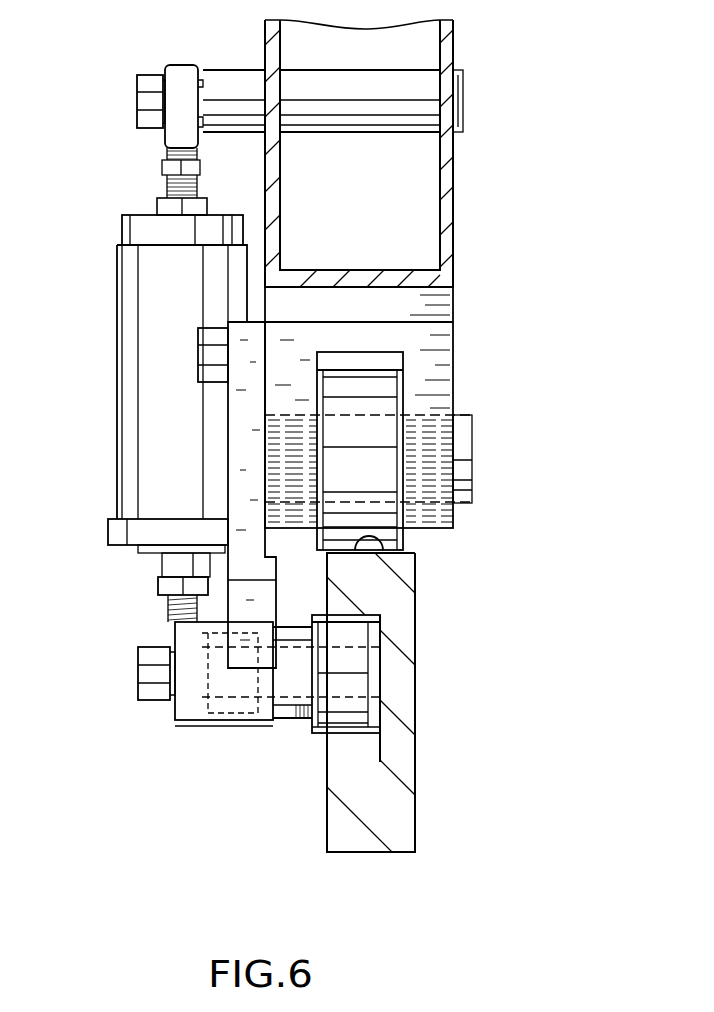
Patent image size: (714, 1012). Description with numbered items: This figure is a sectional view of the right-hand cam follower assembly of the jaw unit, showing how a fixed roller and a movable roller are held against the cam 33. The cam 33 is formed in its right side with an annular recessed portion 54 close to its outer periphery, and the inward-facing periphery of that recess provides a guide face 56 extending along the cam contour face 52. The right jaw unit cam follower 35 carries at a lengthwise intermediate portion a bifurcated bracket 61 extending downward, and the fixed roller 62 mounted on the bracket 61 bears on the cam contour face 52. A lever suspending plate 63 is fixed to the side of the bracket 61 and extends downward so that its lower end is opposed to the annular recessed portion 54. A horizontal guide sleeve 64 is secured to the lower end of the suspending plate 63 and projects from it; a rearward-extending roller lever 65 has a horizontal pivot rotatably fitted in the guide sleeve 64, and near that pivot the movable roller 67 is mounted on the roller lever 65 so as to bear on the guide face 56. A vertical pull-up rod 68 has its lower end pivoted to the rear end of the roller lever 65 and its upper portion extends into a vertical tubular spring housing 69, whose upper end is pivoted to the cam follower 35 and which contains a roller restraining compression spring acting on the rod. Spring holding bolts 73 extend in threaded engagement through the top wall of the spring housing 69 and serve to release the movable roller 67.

The cam 33 is at (417, 805).
The right jaw unit cam follower 35 is at (455, 193).
The cam contour face 52 is at (393, 554).
The annular recessed portion 54 is at (375, 740).
The guide face 56 is at (378, 636).
The bifurcated bracket 61 is at (433, 521).
The fixed roller 62 is at (385, 403).
The lever suspending plate 63 is at (243, 465).
The horizontal guide sleeve 64 is at (188, 714).
The roller lever 65 is at (296, 683).
The movable roller 67 is at (355, 717).
The vertical pull-up rod 68 is at (160, 566).
The vertical tubular spring housing 69 is at (146, 355).
The spring holding bolts 73 is at (167, 184).